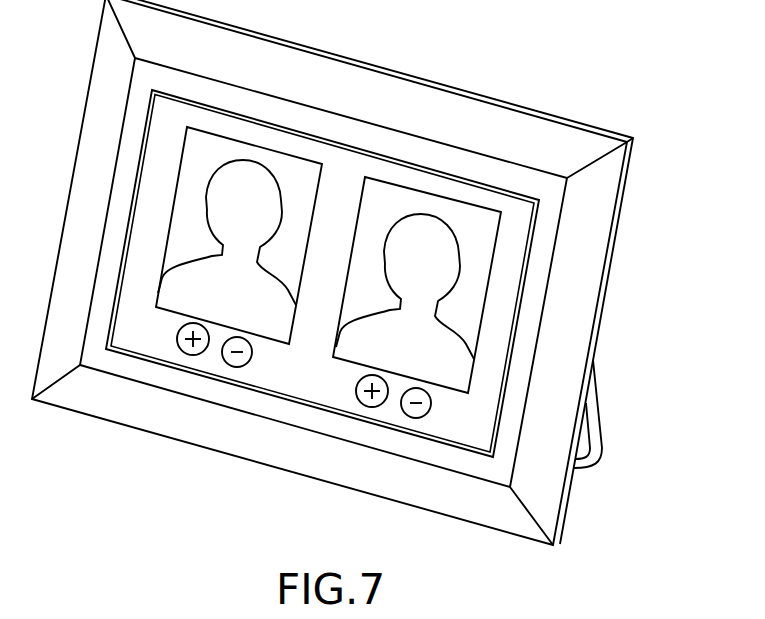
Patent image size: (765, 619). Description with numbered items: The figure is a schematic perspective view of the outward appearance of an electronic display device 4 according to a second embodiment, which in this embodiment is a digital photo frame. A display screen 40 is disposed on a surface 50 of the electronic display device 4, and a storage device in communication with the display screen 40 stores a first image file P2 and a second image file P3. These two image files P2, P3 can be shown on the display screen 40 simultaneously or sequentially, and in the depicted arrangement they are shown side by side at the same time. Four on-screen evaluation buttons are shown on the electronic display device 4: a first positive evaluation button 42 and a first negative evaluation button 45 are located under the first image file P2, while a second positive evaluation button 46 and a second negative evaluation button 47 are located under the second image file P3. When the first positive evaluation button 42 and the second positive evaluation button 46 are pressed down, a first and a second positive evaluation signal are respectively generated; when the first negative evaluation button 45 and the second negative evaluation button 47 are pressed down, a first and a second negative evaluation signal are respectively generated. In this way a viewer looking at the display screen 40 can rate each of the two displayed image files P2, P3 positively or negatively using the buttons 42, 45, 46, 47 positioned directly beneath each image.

The electronic display device 4 is at (541, 30).
The display screen 40 is at (213, 109).
The surface 50 is at (272, 403).
The first image file P2 is at (288, 173).
The second image file P3 is at (467, 222).
The first positive evaluation button 42 is at (178, 339).
The second positive evaluation button 46 is at (227, 361).
The first negative evaluation button 45 is at (357, 393).
The second negative evaluation button 47 is at (400, 412).